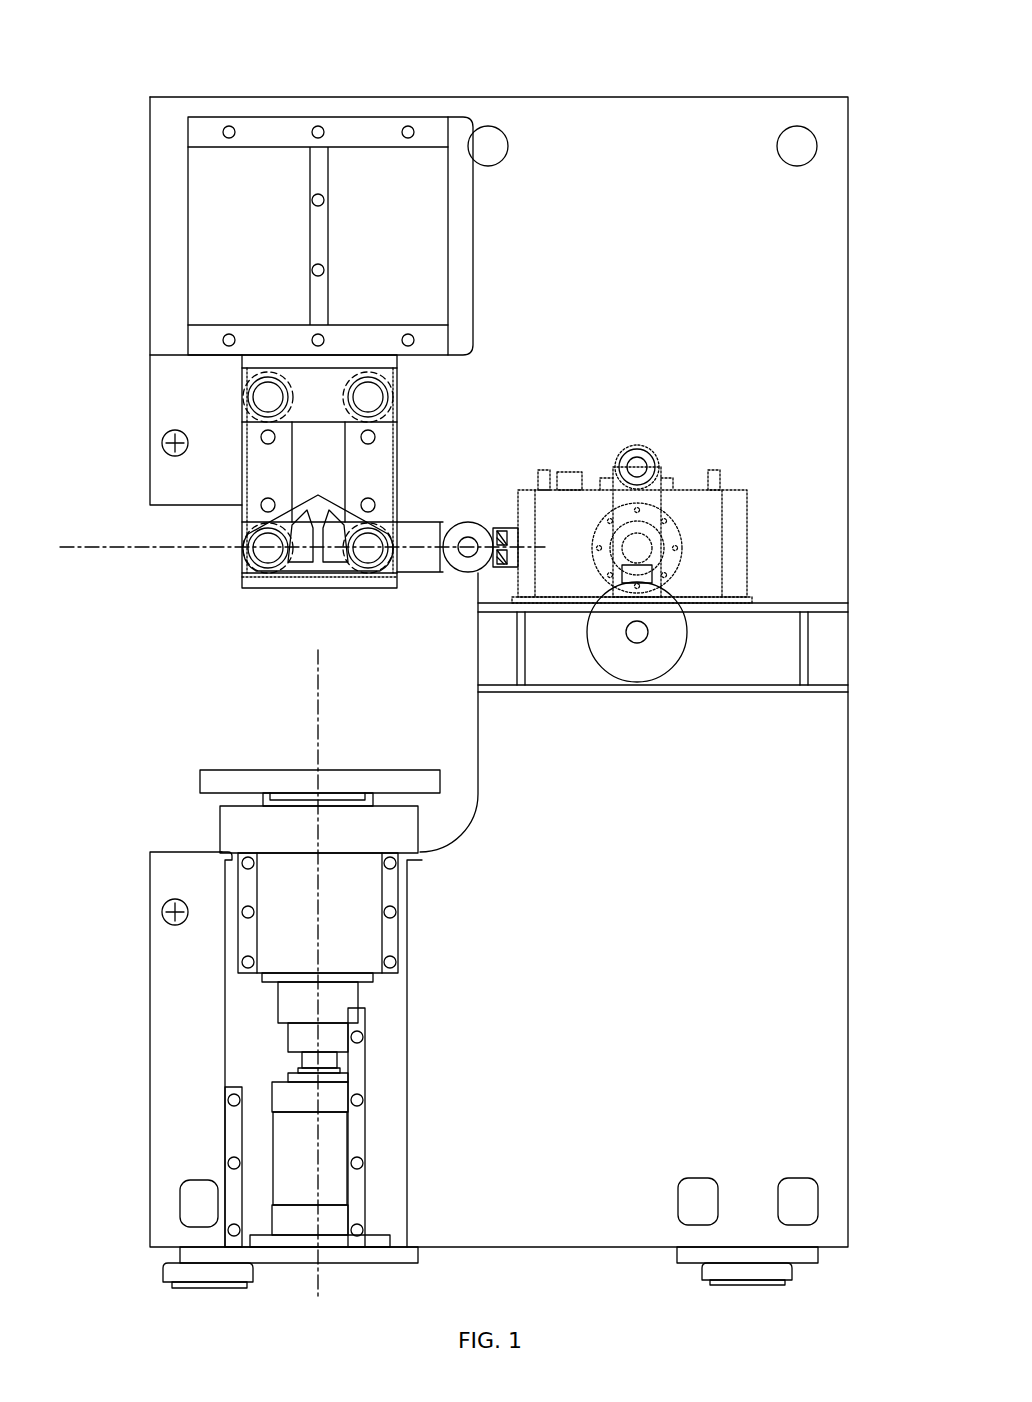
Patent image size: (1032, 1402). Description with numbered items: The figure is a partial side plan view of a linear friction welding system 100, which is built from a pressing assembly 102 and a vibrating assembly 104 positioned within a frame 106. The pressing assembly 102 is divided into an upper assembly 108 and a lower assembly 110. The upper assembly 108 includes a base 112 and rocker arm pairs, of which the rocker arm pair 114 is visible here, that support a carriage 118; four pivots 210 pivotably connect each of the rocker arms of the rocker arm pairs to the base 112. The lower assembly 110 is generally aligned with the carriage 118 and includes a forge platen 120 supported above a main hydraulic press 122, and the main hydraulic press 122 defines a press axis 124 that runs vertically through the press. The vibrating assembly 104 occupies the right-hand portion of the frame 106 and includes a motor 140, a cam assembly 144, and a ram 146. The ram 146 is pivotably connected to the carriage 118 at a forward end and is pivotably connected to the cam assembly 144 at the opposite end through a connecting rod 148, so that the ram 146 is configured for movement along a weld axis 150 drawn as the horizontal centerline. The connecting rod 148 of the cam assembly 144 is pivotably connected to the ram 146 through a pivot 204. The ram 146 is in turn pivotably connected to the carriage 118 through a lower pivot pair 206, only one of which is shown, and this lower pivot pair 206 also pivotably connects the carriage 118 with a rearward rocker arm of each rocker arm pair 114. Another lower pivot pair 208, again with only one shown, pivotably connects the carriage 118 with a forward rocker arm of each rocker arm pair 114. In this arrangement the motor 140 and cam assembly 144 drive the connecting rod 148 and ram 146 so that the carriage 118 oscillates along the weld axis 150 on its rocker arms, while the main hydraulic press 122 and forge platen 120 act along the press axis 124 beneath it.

The linear friction welding system 100 is at (72, 137).
The pressing assembly 102 is at (105, 980).
The vibrating assembly 104 is at (710, 398).
The frame 106 is at (848, 318).
The upper assembly 108 is at (534, 247).
The lower assembly 110 is at (440, 1054).
The base 112 is at (473, 337).
The rocker arm pair 114 is at (243, 470).
The carriage 118 is at (242, 576).
The forge platen 120 is at (250, 768).
The main hydraulic press 122 is at (365, 1140).
The press axis 124 is at (318, 740).
The motor 140 is at (683, 667).
The cam assembly 144 is at (720, 488).
The ram 146 is at (428, 527).
The connecting rod 148 is at (480, 567).
The weld axis 150 is at (117, 560).
The pivot 204 is at (438, 567).
The lower pivot pair 206 is at (357, 565).
The lower pivot pair 208 is at (258, 550).
The pivots 210 is at (258, 400).